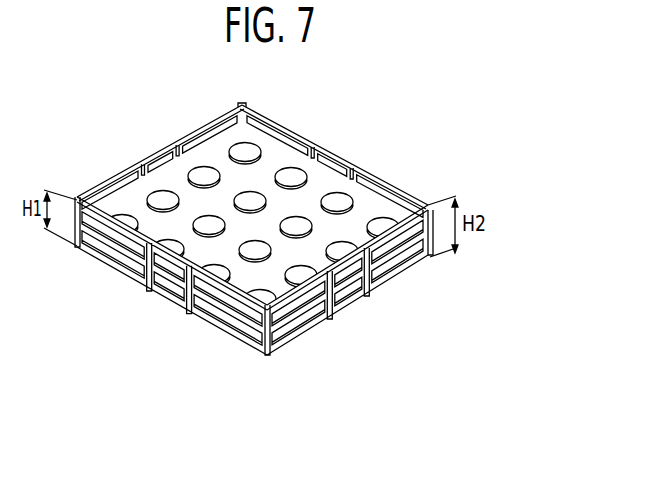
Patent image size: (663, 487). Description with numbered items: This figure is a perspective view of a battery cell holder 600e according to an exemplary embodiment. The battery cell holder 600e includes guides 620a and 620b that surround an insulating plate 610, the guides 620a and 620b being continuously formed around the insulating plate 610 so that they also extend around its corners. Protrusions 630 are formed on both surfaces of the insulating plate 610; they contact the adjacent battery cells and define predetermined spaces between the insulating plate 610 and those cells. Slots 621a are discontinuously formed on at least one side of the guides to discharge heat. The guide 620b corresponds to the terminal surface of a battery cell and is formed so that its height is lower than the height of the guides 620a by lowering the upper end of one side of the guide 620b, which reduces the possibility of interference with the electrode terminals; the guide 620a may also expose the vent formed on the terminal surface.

The battery cell holder 600e is at (377, 138).
The insulating plate 610 is at (365, 215).
The guide 620a is at (323, 322).
The guide 620b is at (158, 268).
The slot 621a is at (400, 268).
The protrusion 630 is at (248, 150).